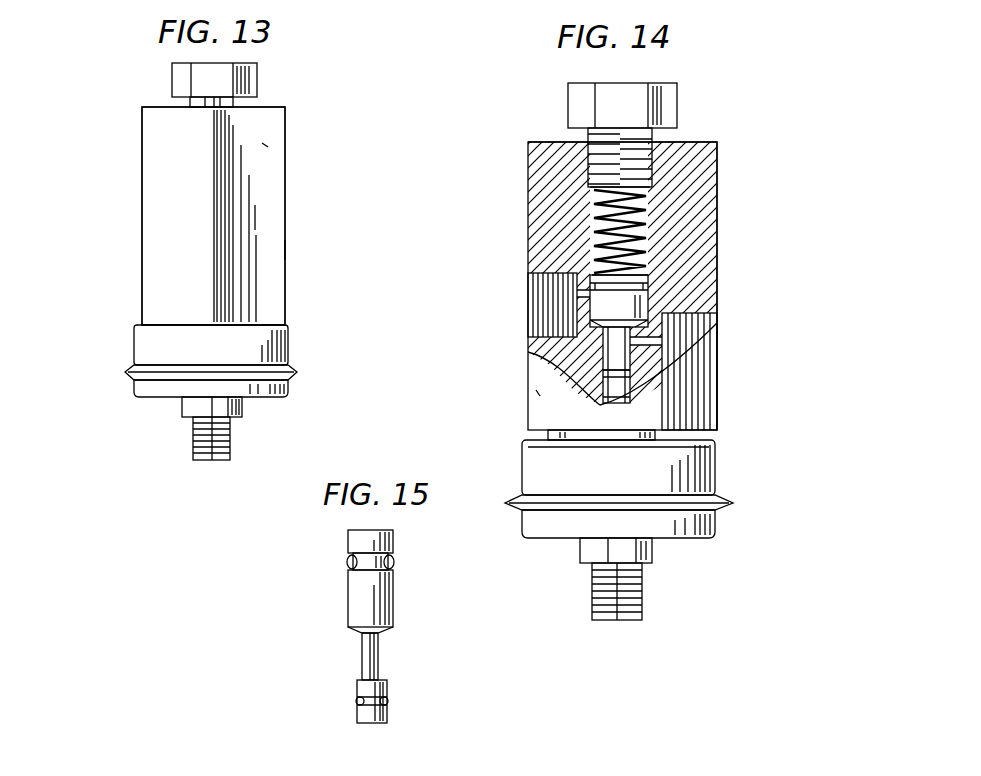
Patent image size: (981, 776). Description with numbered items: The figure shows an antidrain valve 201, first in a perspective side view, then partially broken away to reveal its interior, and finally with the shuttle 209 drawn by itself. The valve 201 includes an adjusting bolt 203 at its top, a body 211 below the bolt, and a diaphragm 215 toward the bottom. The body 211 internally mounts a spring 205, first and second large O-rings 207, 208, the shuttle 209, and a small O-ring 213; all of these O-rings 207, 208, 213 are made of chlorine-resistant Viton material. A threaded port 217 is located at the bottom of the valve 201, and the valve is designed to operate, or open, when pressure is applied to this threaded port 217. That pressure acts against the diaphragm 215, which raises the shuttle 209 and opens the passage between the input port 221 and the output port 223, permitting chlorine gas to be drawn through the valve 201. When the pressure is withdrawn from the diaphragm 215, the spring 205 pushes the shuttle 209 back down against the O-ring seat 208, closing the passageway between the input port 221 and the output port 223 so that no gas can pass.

In FIG. 13, the antidrain valve 201 is at (134, 141).
In FIG. 14, the antidrain valve 201 is at (732, 534).
In FIG. 13, the adjusting bolt 203 is at (262, 74).
In FIG. 14, the adjusting bolt 203 is at (568, 103).
In FIG. 14, the spring 205 is at (598, 226).
In FIG. 14, the first large O-ring 207 is at (593, 290).
In FIG. 15, the first large O-ring 207 is at (348, 557).
In FIG. 14, the second large O-ring 208 is at (577, 310).
In FIG. 14, the shuttle 209 is at (610, 350).
In FIG. 15, the shuttle 209 is at (400, 651).
In FIG. 13, the body 211 is at (263, 145).
In FIG. 14, the body 211 is at (538, 393).
In FIG. 14, the small O-ring 213 is at (606, 372).
In FIG. 15, the small O-ring 213 is at (357, 700).
In FIG. 13, the diaphragm 215 is at (283, 345).
In FIG. 14, the diaphragm 215 is at (548, 522).
In FIG. 13, the threaded port 217 is at (231, 430).
In FIG. 14, the threaded port 217 is at (643, 584).
In FIG. 13, the input port 221 is at (142, 218).
In FIG. 14, the input port 221 is at (546, 316).
In FIG. 13, the output port 223 is at (288, 250).
In FIG. 14, the output port 223 is at (697, 322).